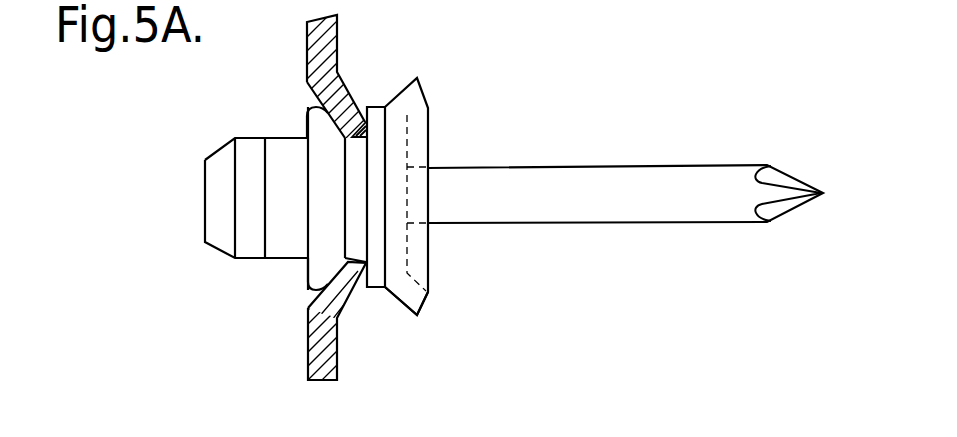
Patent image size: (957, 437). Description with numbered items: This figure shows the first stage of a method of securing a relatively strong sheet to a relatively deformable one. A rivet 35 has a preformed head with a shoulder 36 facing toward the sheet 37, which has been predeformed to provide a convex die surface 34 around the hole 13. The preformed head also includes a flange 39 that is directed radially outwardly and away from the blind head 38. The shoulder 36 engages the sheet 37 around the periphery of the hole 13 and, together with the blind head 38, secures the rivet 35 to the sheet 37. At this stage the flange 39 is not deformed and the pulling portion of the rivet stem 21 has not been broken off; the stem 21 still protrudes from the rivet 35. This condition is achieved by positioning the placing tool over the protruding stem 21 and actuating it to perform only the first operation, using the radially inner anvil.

The hole 13 is at (362, 262).
The rivet stem 21 is at (602, 173).
The convex die surface 34 is at (352, 298).
The rivet 35 is at (442, 158).
The shoulder 36 is at (358, 127).
The sheet 37 is at (323, 32).
The blind head 38 is at (312, 116).
The flange 39 is at (416, 298).